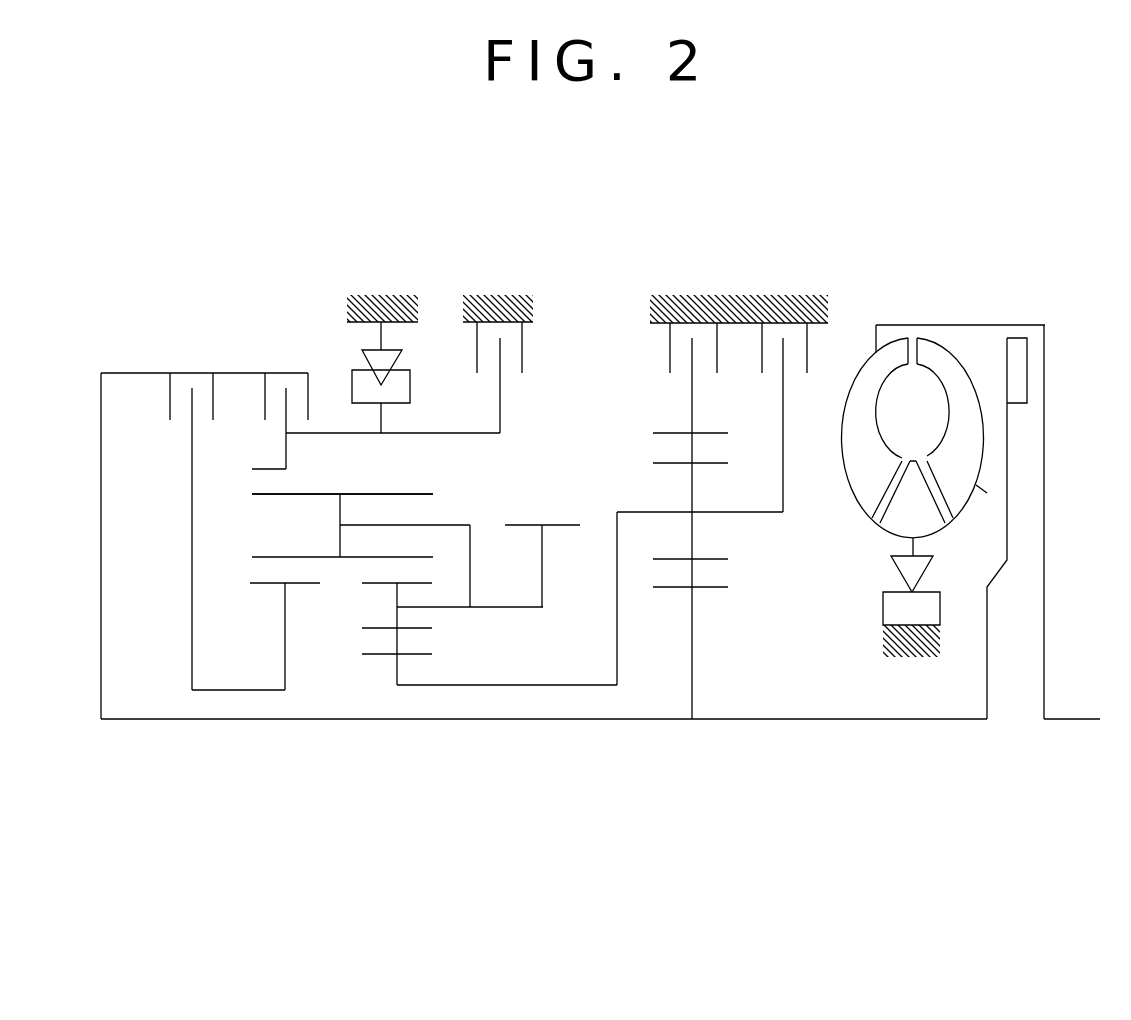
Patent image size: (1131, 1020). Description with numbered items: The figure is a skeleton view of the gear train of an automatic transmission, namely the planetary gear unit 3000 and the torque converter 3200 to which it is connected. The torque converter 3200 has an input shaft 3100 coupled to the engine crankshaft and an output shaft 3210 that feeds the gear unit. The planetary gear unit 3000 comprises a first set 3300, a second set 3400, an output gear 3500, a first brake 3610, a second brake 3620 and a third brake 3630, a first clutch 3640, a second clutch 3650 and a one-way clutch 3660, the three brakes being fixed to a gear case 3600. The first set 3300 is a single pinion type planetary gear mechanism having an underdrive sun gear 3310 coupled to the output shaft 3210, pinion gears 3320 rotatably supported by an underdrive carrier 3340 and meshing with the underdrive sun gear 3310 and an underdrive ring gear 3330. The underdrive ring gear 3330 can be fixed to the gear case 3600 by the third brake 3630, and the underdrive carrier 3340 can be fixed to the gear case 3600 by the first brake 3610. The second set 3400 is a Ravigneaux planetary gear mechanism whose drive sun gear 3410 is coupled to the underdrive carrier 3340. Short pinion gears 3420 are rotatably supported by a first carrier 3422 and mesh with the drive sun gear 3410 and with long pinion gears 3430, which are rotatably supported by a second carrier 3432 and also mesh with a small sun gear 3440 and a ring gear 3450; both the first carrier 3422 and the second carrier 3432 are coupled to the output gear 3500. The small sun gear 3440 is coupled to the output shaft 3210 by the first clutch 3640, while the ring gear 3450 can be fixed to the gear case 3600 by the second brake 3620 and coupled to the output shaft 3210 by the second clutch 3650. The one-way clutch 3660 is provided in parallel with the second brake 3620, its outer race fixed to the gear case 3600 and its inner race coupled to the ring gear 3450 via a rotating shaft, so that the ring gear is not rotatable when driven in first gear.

The planetary gear unit 3000 is at (624, 213).
The input shaft 3100 is at (1068, 722).
The torque converter 3200 is at (940, 301).
The output shaft 3210 is at (795, 718).
The first set 3300 is at (690, 736).
The sun gear S(UD) 3310 is at (711, 629).
The pinion gears 3320 is at (721, 549).
The ring gear R(UD) 3330 is at (701, 431).
The carrier C(UD) 3340 is at (785, 483).
The second set 3400 is at (395, 738).
The sun gear S(D) 3410 is at (443, 654).
The short pinion gears 3420 is at (358, 594).
The carrier C(1) 3422 is at (458, 607).
The long pinion gears 3430 is at (440, 490).
The carrier C(2) 3432 is at (414, 522).
The sun gear S(S) 3440 is at (282, 594).
The ring gear R(1)(R(2)) 3450 is at (316, 449).
The output gear 3500 is at (567, 517).
The gear case 3600 is at (382, 292).
The B1 brake 3610 is at (798, 380).
The B2 brake 3620 is at (518, 378).
The B3 brake 3630 is at (665, 380).
The C1 clutch 3640 is at (166, 407).
The C2 clutch 3650 is at (258, 407).
The one-way clutch F 3660 is at (349, 354).